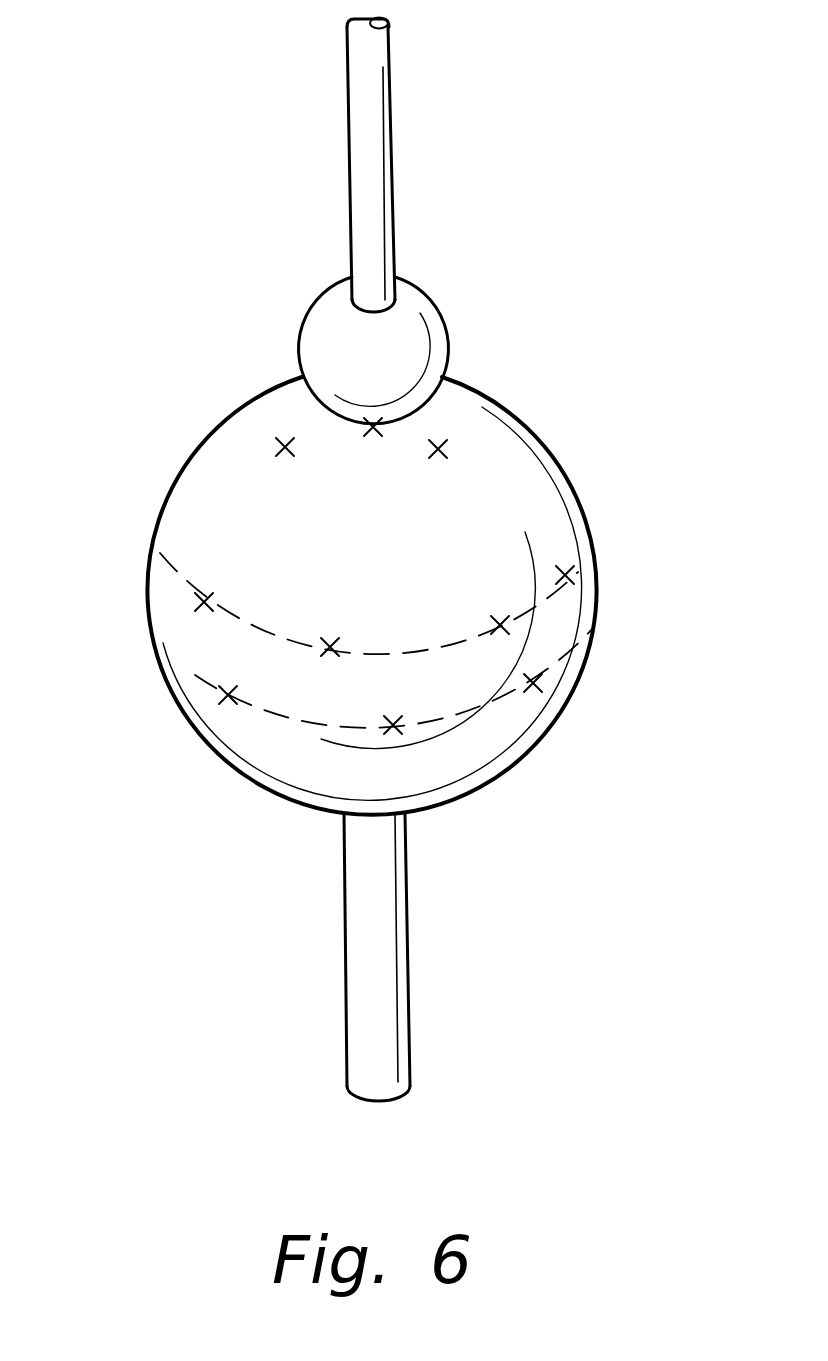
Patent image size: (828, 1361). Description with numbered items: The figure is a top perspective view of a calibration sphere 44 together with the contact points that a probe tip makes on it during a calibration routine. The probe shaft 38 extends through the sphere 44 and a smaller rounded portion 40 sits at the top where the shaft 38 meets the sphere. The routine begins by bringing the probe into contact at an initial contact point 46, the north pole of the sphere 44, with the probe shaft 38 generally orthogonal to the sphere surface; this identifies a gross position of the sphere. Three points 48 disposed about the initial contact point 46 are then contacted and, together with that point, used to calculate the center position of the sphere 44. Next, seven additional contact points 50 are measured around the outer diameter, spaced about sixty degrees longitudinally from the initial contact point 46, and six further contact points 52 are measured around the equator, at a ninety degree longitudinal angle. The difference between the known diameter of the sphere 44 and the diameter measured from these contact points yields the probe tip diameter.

The probe shaft 38 is at (392, 75).
The neck portion 40 is at (426, 304).
The calibration sphere 44 is at (551, 486).
The initial contact point 46 is at (360, 429).
The three points 48 is at (278, 447).
The additional contact points 50 is at (328, 645).
The additional contact points 52 is at (393, 725).